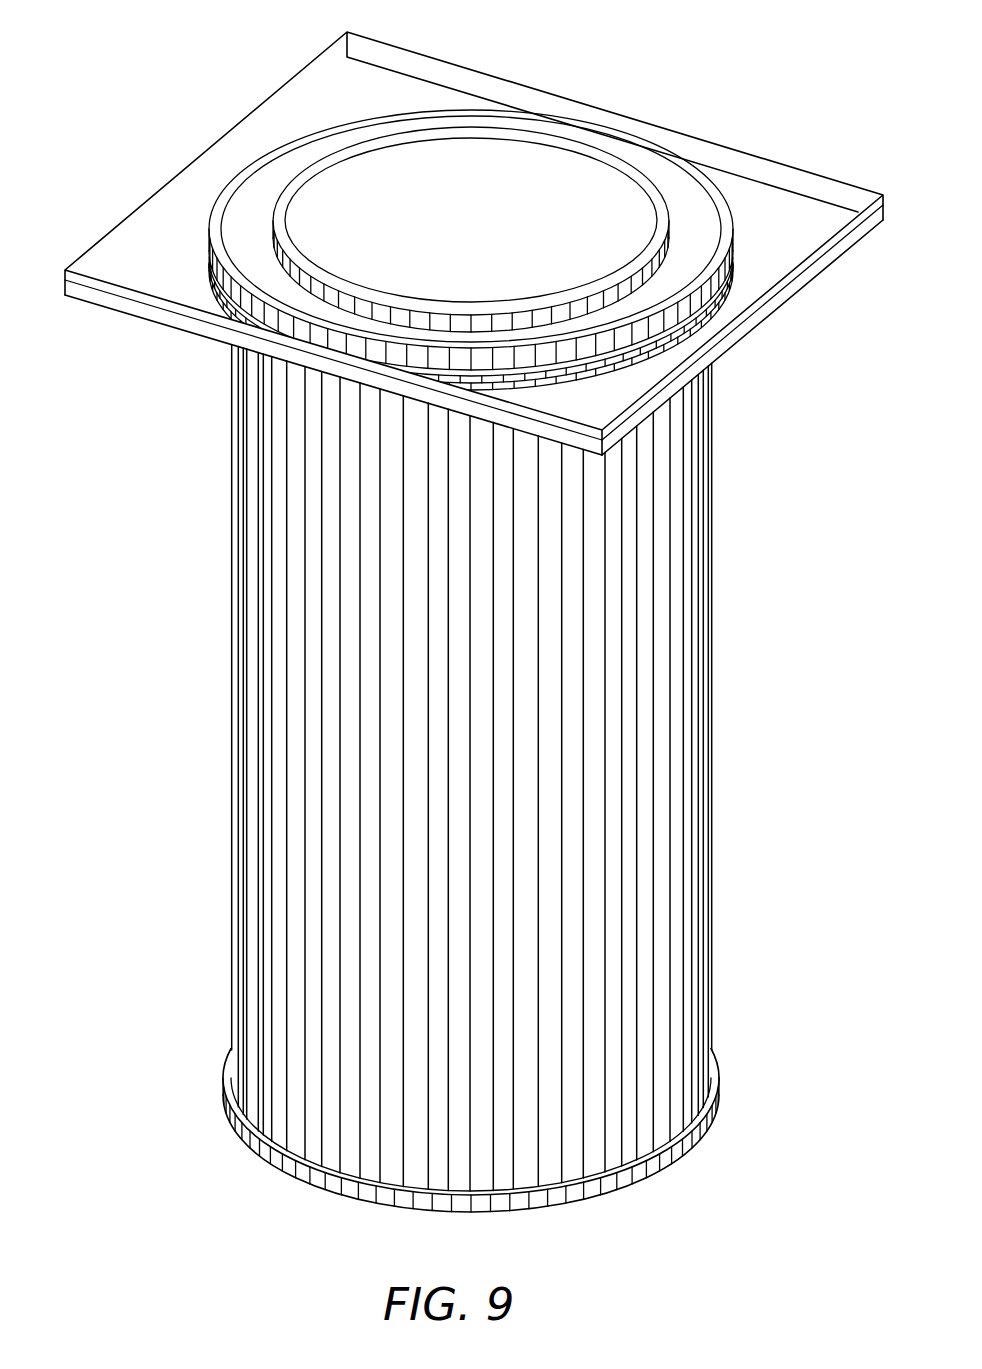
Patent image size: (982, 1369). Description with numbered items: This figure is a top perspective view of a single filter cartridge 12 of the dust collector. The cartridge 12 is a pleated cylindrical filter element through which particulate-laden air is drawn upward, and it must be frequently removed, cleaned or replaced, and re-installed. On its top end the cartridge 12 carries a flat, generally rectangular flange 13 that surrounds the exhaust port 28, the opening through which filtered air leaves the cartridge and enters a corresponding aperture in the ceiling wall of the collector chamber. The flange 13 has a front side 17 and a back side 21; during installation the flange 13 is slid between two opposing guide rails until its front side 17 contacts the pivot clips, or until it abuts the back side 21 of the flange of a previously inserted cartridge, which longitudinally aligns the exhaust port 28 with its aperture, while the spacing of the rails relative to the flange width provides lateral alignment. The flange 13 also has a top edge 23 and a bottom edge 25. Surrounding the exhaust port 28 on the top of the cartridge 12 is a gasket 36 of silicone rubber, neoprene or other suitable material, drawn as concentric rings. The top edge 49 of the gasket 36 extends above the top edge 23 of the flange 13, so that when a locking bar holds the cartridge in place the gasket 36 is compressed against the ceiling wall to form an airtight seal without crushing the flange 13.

The filter cartridge 12 is at (280, 805).
The flange 13 is at (784, 303).
The front side 17 is at (474, 249).
The back side 21 is at (713, 350).
The top edge 23 is at (147, 291).
The bottom edge 25 is at (188, 331).
The exhaust port 28 is at (540, 163).
The gasket 36 is at (675, 177).
The top edge of the gasket 49 is at (457, 125).